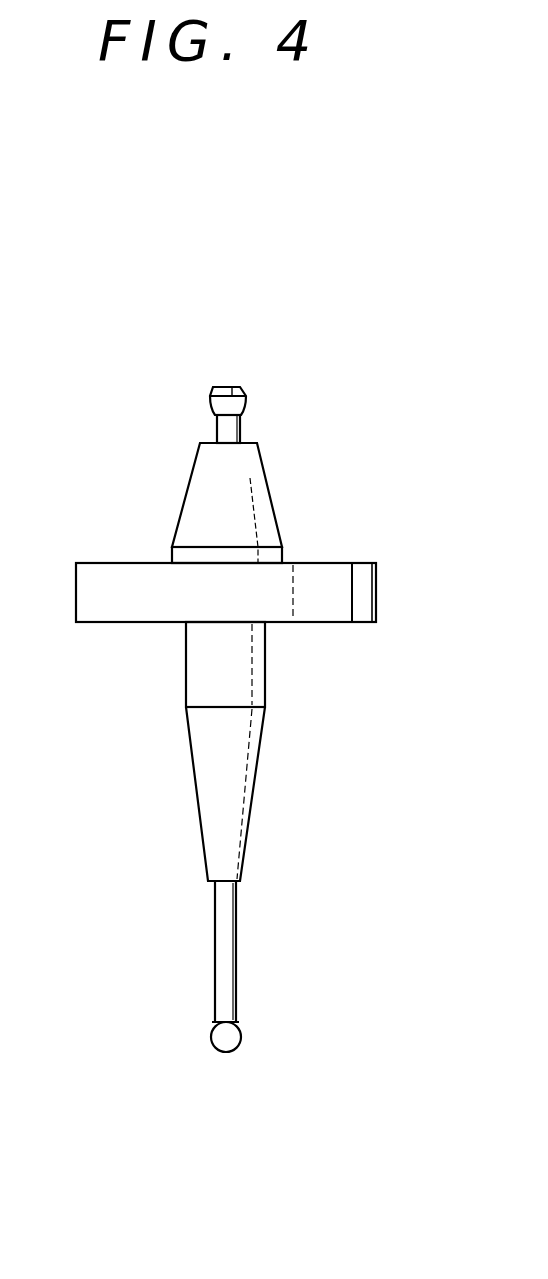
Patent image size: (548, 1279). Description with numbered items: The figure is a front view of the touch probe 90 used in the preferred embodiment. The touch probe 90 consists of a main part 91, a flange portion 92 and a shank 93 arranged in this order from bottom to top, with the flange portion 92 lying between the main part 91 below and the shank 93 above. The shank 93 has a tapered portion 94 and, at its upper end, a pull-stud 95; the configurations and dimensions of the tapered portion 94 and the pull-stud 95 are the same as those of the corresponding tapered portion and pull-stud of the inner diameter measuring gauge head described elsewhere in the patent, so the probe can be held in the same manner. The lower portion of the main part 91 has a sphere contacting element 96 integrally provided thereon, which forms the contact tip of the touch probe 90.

The touch probe 90 is at (371, 530).
The main part 91 is at (257, 694).
The flange portion 92 is at (363, 592).
The shank 93 is at (167, 460).
The tapered portion 94 is at (188, 512).
The pull-stud 95 is at (212, 391).
The sphere contacting element 96 is at (222, 1042).